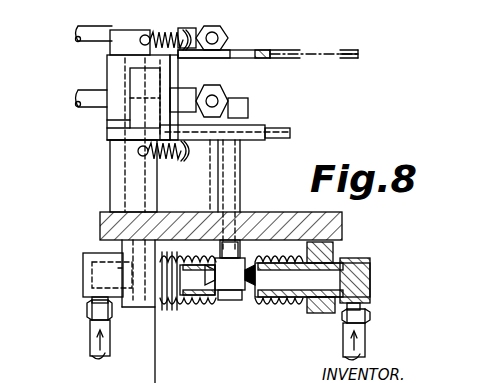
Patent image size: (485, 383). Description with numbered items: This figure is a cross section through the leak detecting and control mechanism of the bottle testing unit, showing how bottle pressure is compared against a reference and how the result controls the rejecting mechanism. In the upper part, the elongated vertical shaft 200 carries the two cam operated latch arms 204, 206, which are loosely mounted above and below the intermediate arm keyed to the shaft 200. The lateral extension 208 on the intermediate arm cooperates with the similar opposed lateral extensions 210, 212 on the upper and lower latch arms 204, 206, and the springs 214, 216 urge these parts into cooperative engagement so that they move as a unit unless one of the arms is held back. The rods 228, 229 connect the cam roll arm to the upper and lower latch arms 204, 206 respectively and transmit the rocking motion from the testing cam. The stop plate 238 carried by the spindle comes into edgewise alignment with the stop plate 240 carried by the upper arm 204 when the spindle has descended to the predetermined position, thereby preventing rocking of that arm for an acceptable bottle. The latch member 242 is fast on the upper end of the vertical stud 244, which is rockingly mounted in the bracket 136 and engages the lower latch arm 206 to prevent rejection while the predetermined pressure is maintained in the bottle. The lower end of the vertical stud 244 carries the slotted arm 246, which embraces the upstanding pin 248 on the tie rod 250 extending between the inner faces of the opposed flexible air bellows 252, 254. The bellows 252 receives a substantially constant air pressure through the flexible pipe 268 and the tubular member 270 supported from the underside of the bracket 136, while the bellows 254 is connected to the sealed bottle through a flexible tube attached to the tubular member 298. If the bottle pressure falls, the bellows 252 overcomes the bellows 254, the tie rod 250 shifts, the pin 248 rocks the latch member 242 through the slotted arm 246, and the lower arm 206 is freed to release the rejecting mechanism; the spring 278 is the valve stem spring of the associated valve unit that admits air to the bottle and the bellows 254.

The bracket 136 is at (342, 226).
The elongated vertical shaft 200 is at (152, 372).
The upper cam operated latch arm 204 is at (107, 68).
The lower cam operated latch arm 206 is at (107, 126).
The lateral extension 208 is at (110, 138).
The lateral extension 210 is at (200, 74).
The lateral extension 212 is at (205, 130).
The spring 214 is at (165, 30).
The spring 216 is at (160, 153).
The rod 228 is at (88, 26).
The rod 229 is at (78, 97).
The stop plate 238 is at (346, 53).
The stop plate 240 is at (283, 50).
The latch member 242 is at (290, 133).
The vertical stud 244 is at (240, 192).
The slotted arm 246 is at (250, 240).
The upstanding pin 248 is at (222, 240).
The tie rod 250 is at (213, 285).
The flexible air bellows 252 is at (167, 300).
The flexible air bellows 254 is at (270, 305).
The flexible pipe 268 is at (88, 343).
The tubular member 270 is at (83, 273).
The spring 278 is at (0, 318).
The tubular member 298 is at (370, 268).